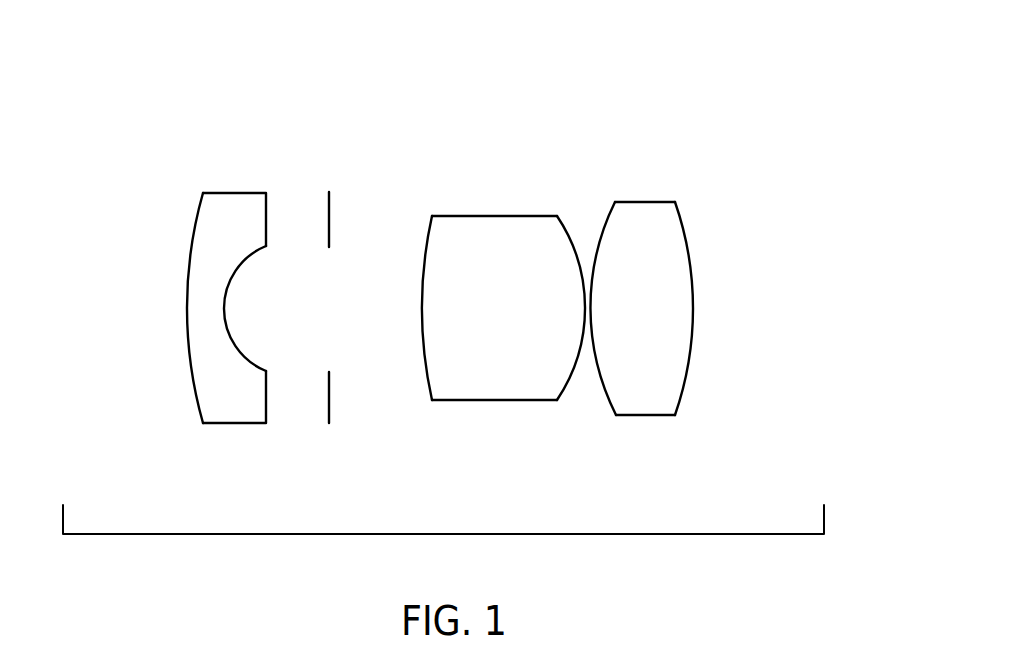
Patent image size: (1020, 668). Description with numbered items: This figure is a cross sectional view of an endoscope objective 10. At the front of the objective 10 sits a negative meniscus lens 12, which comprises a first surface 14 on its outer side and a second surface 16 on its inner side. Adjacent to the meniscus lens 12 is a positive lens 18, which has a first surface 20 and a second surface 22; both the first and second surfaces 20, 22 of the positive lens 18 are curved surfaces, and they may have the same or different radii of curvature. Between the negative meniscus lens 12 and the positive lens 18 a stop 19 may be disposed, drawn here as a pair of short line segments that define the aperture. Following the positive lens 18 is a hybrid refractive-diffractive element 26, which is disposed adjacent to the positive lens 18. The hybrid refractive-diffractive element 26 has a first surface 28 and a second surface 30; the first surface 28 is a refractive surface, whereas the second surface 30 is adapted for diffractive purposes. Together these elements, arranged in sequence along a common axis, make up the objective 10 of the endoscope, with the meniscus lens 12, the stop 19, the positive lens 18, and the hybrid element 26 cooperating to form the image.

The objective 10 is at (742, 54).
The negative meniscus lens 12 is at (236, 193).
The first surface 14 is at (188, 285).
The second surface 16 is at (225, 297).
The positive lens 18 is at (481, 216).
The stop 19 is at (330, 404).
The first surface 20 is at (422, 292).
The second surface 22 is at (571, 238).
The hybrid refractive-diffractive element 26 is at (643, 202).
The first surface 28 is at (606, 403).
The second surface 30 is at (694, 307).